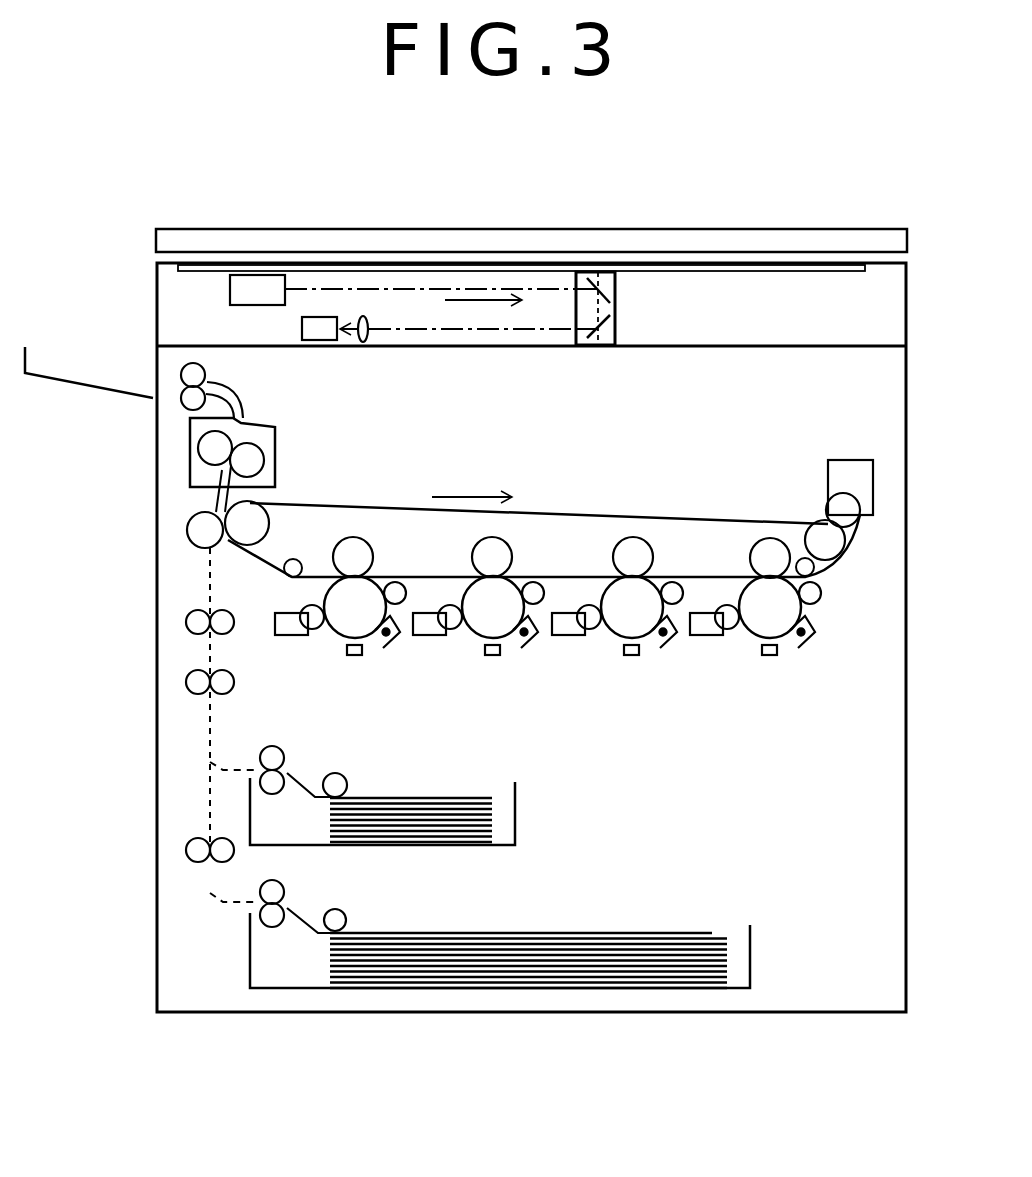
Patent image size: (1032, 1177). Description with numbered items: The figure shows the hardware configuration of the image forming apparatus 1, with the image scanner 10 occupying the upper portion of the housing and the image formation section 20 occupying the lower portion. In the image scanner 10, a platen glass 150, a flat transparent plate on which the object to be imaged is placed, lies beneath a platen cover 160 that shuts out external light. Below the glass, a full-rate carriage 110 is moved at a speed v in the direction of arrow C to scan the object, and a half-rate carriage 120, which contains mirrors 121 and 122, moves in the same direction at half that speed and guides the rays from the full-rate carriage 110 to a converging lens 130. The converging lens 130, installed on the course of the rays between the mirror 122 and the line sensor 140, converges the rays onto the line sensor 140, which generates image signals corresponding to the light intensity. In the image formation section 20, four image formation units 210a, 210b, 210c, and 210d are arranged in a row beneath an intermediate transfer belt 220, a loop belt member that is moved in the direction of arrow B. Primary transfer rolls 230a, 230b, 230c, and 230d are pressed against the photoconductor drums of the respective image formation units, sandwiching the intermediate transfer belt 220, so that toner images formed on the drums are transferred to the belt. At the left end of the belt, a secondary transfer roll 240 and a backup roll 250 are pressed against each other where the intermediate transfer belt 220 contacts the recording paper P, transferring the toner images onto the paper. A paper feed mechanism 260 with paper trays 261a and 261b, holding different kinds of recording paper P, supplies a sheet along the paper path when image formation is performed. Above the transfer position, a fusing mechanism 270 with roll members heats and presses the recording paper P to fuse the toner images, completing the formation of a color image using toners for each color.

The image forming apparatus 1 is at (600, 222).
The image scanner 10 is at (147, 312).
The image formation section 20 is at (147, 667).
The full-rate carriage 110 is at (232, 290).
The half-rate carriage 120 is at (615, 308).
The mirror 121 is at (615, 283).
The mirror 122 is at (615, 333).
The converging lens 130 is at (366, 343).
The line sensor 140 is at (318, 341).
The platen glass 150 is at (797, 272).
The platen cover 160 is at (800, 228).
The image formation unit 210a is at (335, 645).
The image formation unit 210b is at (473, 647).
The image formation unit 210c is at (612, 647).
The image formation unit 210d is at (750, 647).
The intermediate transfer belt 220 is at (607, 513).
The primary transfer roll 230a is at (362, 556).
The primary transfer roll 230b is at (498, 551).
The primary transfer roll 230c is at (640, 550).
The primary transfer roll 230d is at (765, 545).
The secondary transfer roll 240 is at (205, 530).
The backup roll 250 is at (258, 523).
The paper feed mechanism 260 is at (297, 752).
The paper tray 261a is at (515, 808).
The paper tray 261b is at (750, 952).
The fusing mechanism 270 is at (210, 447).
The recording paper P is at (425, 797).
The arrow B is at (485, 497).
The arrow C is at (496, 304).